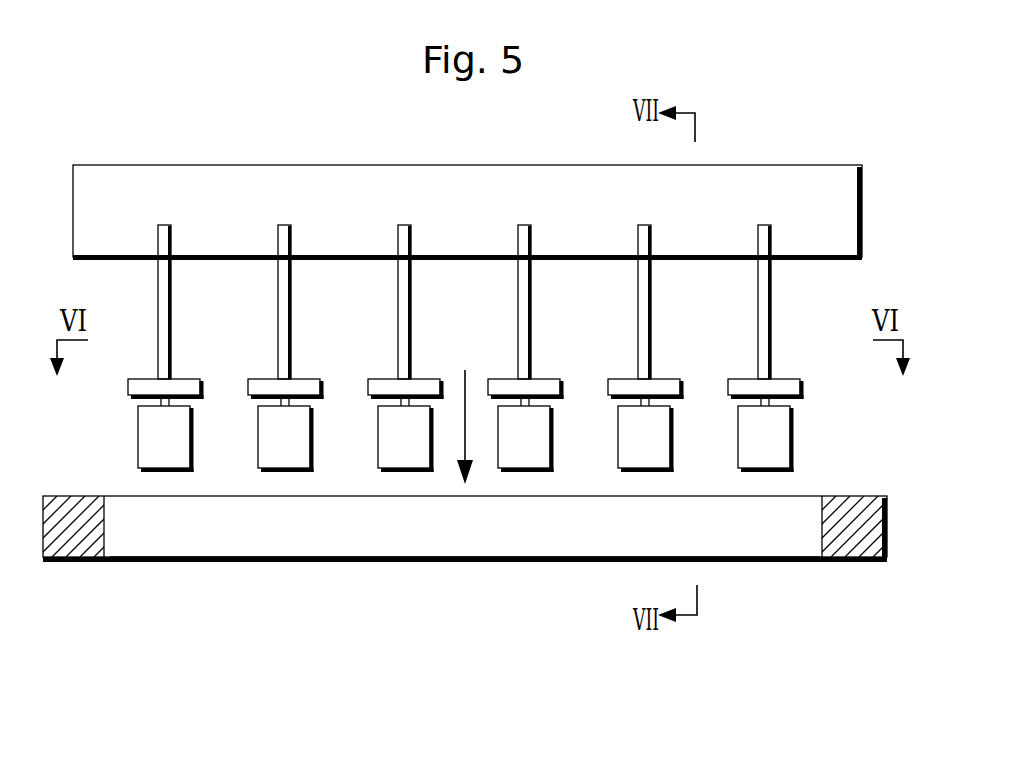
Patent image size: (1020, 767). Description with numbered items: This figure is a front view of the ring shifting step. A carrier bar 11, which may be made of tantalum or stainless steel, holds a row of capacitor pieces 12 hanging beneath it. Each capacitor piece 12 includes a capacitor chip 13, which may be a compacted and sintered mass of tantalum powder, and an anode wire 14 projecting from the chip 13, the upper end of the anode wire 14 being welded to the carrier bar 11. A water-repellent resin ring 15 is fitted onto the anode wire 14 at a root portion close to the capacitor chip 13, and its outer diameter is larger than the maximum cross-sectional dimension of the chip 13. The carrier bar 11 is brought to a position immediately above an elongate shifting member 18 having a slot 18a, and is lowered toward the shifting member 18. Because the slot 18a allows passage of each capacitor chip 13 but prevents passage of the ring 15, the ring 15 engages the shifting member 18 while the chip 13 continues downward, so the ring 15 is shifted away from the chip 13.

The carrier bar 11 is at (752, 165).
The capacitor piece 12 is at (507, 348).
The capacitor chip 13 is at (780, 453).
The anode wire 14 is at (752, 295).
The water-repellent resin ring 15 is at (788, 378).
The shifting member 18 is at (897, 548).
The slot 18a is at (783, 542).